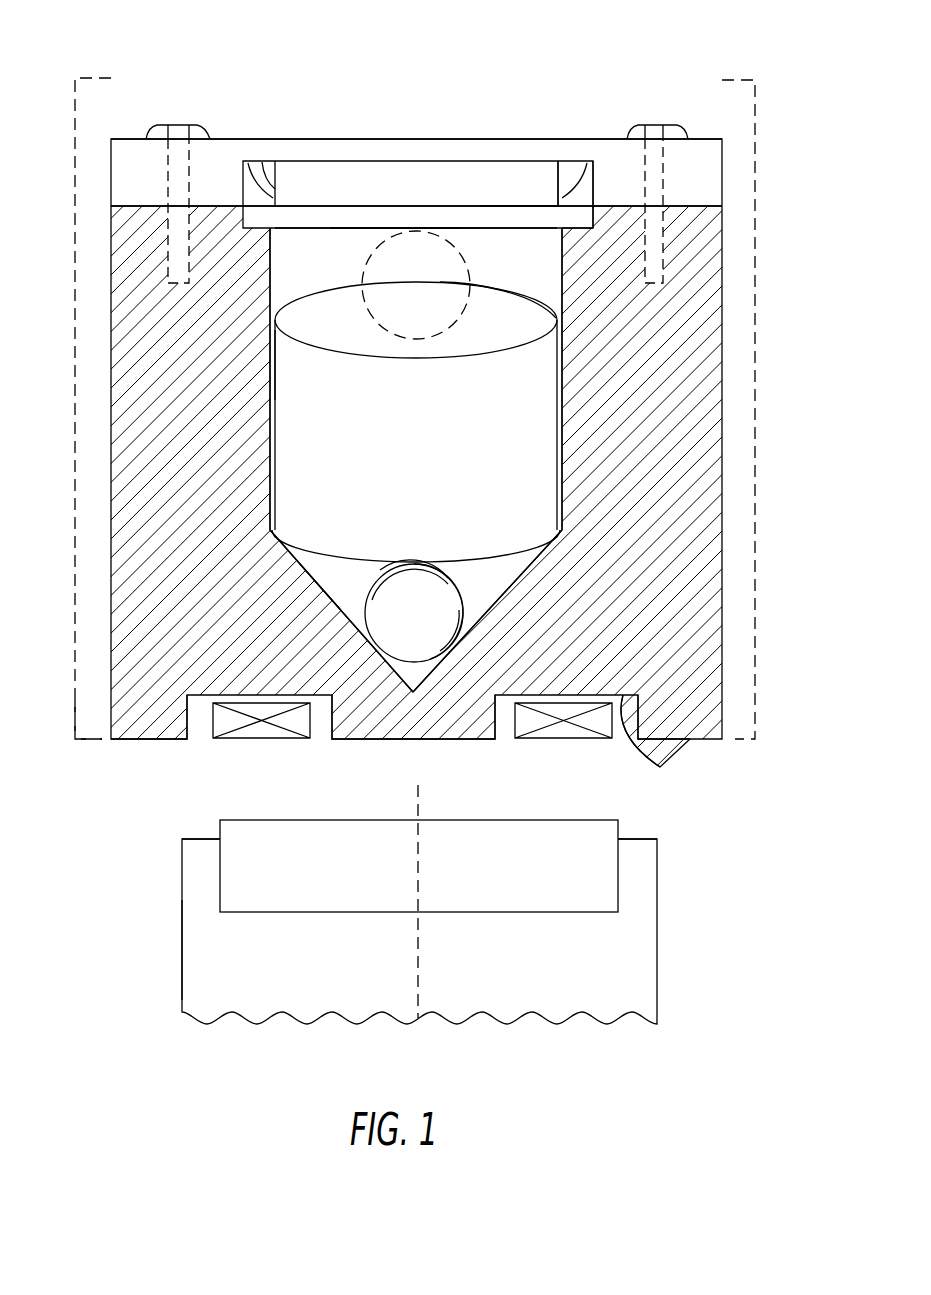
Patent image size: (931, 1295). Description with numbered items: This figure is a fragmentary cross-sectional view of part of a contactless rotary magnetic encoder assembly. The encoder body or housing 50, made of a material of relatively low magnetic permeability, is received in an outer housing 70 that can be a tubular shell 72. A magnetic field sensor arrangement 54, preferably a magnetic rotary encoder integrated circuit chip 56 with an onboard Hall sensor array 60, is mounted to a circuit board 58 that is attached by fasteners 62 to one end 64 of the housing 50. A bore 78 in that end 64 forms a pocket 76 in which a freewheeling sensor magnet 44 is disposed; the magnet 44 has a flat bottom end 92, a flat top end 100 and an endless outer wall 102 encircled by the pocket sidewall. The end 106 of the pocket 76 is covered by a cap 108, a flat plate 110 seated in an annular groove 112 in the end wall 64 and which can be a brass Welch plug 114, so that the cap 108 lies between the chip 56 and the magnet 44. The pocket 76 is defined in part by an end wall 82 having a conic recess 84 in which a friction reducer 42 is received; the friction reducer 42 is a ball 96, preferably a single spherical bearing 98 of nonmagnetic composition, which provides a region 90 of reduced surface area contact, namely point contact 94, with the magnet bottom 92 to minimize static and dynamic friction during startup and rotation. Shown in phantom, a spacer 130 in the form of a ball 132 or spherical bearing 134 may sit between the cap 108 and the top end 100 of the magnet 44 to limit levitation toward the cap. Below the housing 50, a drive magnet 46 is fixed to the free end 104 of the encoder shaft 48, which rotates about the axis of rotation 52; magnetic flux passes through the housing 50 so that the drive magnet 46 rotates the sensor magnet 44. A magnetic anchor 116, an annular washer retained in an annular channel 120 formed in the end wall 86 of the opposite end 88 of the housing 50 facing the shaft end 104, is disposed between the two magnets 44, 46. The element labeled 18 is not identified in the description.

The coil 18 is at (567, 740).
The friction reducer 42 is at (450, 553).
The sensor magnet 44 is at (428, 433).
The drive magnet 46 is at (453, 878).
The encoder shaft 48 is at (562, 264).
The encoder body or housing 50 is at (726, 400).
The axis of rotation 52 is at (420, 965).
The magnetic field sensor arrangement 54 is at (329, 156).
The magnetic rotary encoder integrated circuit chip 56 is at (493, 181).
The circuit board 58 is at (367, 240).
The Hall sensor array 60 is at (518, 214).
The fasteners 62 is at (178, 123).
The end of encoder body or housing 64 is at (210, 205).
The outer housing 70 is at (76, 746).
The tubular shell 72 is at (92, 76).
The pocket 76 is at (352, 263).
The bore 78 is at (416, 218).
The end wall 82 is at (318, 575).
The recess 84 is at (355, 580).
The end wall 86 is at (380, 740).
The opposite end 88 is at (165, 740).
The region of reduced surface area contact 90 is at (406, 552).
The bottom end of sensor magnet 92 is at (516, 560).
The point contact 94 is at (440, 558).
The ball 96 is at (458, 580).
The spherical bearing 98 is at (470, 606).
The top end of sensor magnet 100 is at (535, 325).
The outer wall of sensor magnet 102 is at (300, 356).
The free end of encoder shaft 104 is at (190, 838).
The end of pocket 106 is at (320, 197).
The cap 108 is at (549, 198).
The plate 110 is at (374, 236).
The annular groove 112 is at (577, 228).
The Welch plug 114 is at (370, 216).
The magnetic anchor 116 is at (616, 751).
The annular channel 120 is at (658, 739).
The spacer 130 is at (457, 230).
The ball 132 is at (456, 228).
The spherical bearing 134 is at (470, 312).